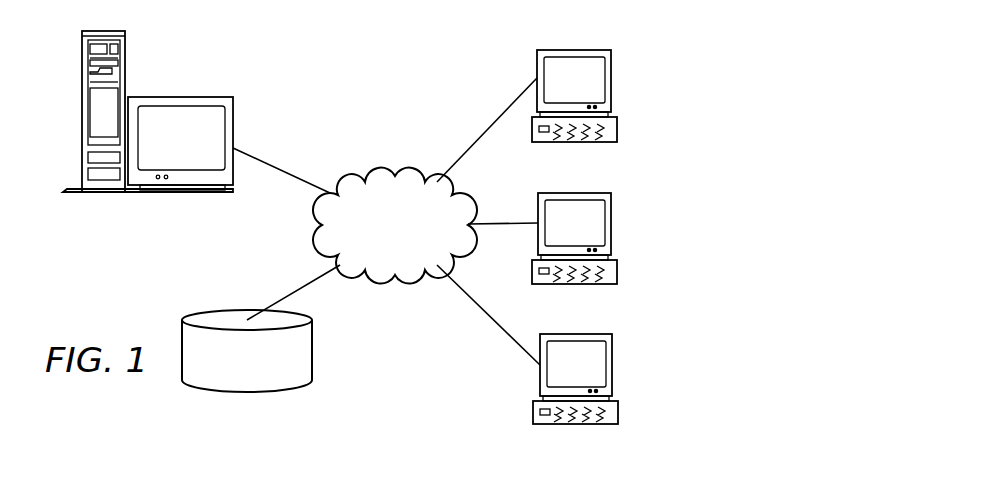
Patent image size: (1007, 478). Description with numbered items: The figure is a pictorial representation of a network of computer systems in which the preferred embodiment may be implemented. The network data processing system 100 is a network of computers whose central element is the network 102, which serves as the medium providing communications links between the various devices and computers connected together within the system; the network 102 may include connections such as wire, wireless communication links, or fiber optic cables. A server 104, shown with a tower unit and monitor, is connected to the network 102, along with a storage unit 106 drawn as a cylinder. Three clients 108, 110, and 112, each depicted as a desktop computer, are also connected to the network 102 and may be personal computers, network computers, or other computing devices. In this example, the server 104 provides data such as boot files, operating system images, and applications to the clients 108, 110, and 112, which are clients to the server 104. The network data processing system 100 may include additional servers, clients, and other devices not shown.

The network data processing system 100 is at (360, 58).
The network 102 is at (368, 173).
The server 104 is at (82, 115).
The storage unit 106 is at (227, 396).
The client 108 is at (613, 82).
The client 110 is at (613, 223).
The client 112 is at (614, 366).